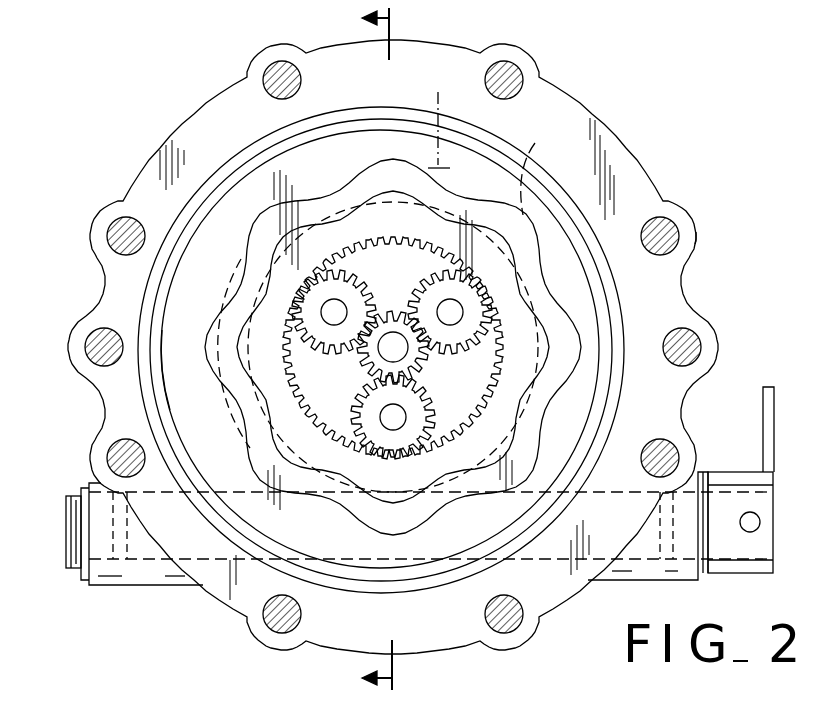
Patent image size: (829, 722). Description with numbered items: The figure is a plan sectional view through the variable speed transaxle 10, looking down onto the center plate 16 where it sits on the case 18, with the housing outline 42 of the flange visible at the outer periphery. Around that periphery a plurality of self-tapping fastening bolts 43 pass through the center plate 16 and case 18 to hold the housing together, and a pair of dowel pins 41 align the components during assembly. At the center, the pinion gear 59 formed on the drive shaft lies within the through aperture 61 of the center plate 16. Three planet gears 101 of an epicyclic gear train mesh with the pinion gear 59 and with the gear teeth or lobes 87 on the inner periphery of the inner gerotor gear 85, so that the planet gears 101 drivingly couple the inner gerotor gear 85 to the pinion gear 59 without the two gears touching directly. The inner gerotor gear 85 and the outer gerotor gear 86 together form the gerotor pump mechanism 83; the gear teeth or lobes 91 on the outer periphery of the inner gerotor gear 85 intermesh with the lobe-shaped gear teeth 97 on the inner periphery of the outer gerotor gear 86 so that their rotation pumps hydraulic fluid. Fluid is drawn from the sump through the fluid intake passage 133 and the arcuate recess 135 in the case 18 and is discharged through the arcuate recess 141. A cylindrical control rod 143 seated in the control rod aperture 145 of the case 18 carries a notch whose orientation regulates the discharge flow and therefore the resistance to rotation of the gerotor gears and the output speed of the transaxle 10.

The variable speed transaxle 10 is at (95, 115).
The center plate 16 is at (613, 147).
The case 18 is at (120, 576).
The dowel pins 41 is at (106, 340).
The end cap 42 is at (700, 234).
The self-tapping fastening bolts 43 is at (281, 62).
The pinion gear 59 is at (432, 378).
The through aperture 61 is at (155, 382).
The gerotor pump mechanism 83 is at (268, 192).
The inner gerotor gear 85 is at (412, 231).
The outer gerotor gear 86 is at (585, 313).
The gear teeth or lobes 87 is at (362, 262).
The gear teeth or lobes 91 is at (352, 258).
The lobe-shaped gear teeth 97 is at (362, 180).
The planet gears 101 is at (359, 288).
The fluid intake passage 133 is at (427, 116).
The arcuate recess 135 is at (541, 163).
The arcuate recess 141 is at (214, 353).
The cylindrical control rod 143 is at (652, 545).
The control rod aperture 145 is at (153, 560).